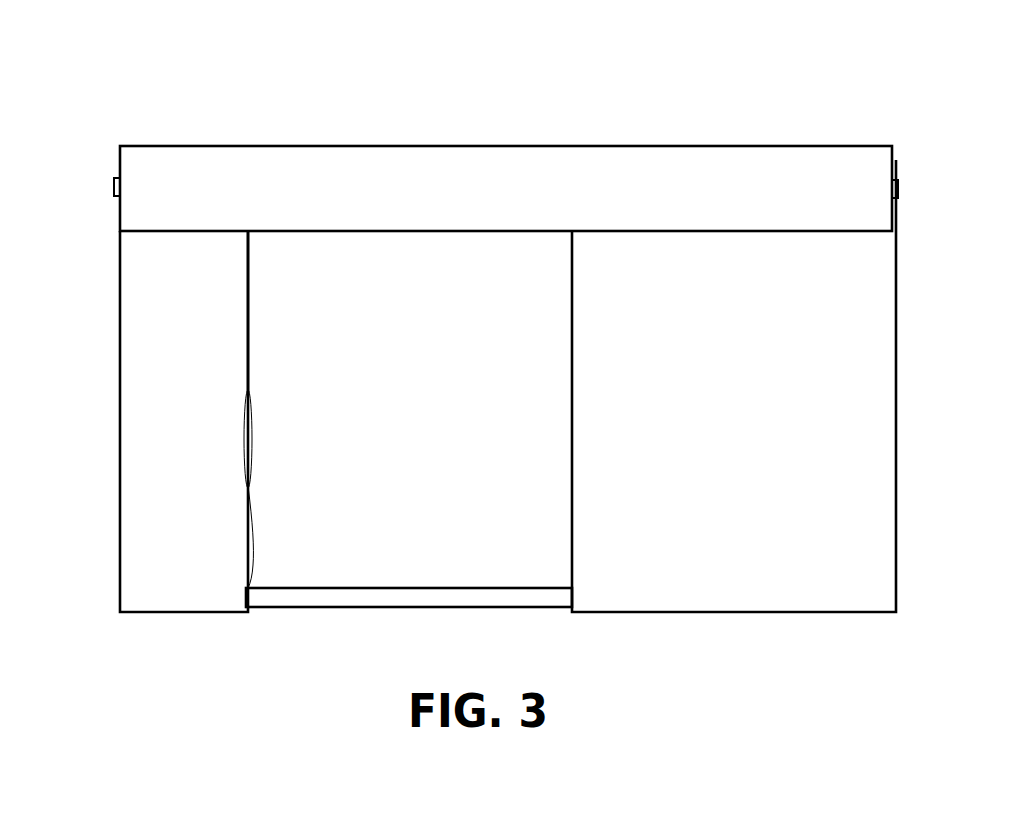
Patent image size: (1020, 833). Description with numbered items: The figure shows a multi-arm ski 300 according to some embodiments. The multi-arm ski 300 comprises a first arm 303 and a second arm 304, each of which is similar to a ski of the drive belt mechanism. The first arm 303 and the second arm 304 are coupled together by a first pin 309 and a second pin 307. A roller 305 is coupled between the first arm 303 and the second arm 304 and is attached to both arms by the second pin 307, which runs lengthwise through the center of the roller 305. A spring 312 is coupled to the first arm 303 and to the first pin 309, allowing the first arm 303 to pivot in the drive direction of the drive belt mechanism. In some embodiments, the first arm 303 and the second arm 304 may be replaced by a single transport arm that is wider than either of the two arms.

The multi-arm ski 300 is at (242, 110).
The first arm 303 is at (184, 421).
The second arm 304 is at (734, 386).
The roller 305 is at (528, 200).
The second pin 307 is at (102, 177).
The first pin 309 is at (409, 608).
The spring 312 is at (258, 423).